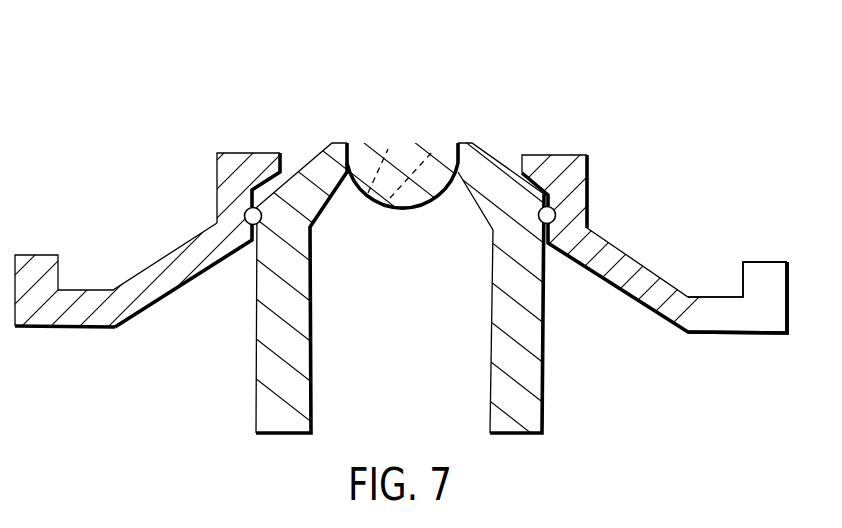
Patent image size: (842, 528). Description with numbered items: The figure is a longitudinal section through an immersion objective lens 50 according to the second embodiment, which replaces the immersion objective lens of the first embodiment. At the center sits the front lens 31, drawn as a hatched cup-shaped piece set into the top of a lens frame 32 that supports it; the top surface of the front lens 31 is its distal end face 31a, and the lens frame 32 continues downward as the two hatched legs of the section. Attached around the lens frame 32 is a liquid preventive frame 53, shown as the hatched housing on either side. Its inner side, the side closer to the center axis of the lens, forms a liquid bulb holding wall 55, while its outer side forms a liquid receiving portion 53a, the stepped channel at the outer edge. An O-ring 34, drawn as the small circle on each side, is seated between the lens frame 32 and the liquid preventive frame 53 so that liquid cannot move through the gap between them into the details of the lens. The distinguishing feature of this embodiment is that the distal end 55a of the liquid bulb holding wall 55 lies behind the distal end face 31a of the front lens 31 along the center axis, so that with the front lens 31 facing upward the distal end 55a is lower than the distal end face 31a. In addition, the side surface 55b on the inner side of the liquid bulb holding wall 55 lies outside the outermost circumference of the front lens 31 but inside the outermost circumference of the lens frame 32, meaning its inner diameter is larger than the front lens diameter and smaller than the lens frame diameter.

The immersion objective lens 50 is at (408, 82).
The front lens 31 is at (430, 156).
The distal end face 31a is at (363, 156).
The lens frame 32 is at (545, 397).
The O-ring 34 is at (249, 225).
The liquid bulb holding wall 55 is at (589, 186).
The distal end 55a is at (230, 152).
The side surface 55b is at (287, 156).
The liquid preventive frame 53 is at (769, 335).
The liquid receiving portion 53a is at (700, 283).